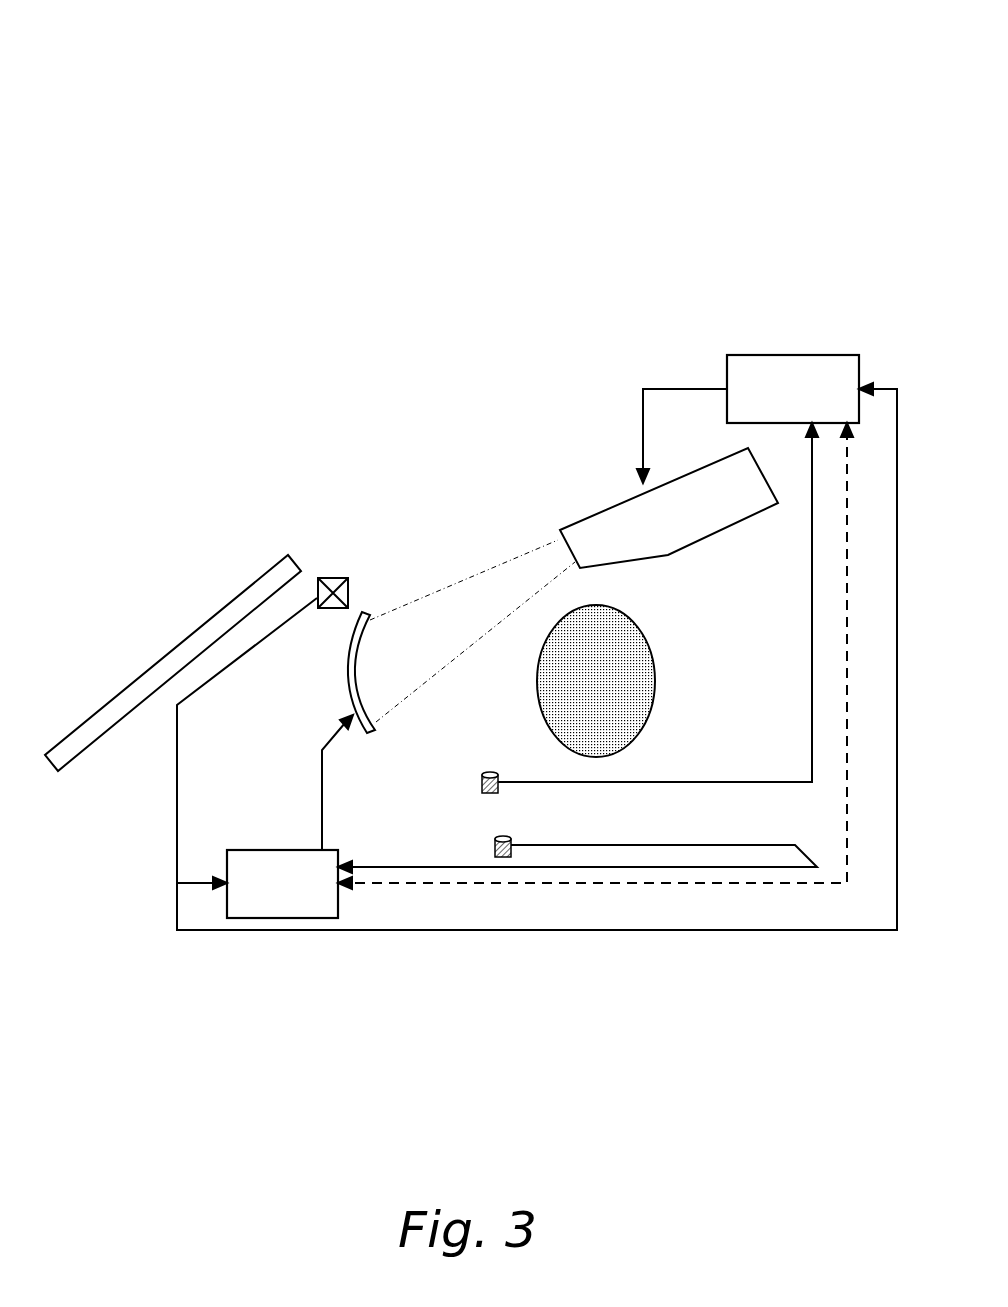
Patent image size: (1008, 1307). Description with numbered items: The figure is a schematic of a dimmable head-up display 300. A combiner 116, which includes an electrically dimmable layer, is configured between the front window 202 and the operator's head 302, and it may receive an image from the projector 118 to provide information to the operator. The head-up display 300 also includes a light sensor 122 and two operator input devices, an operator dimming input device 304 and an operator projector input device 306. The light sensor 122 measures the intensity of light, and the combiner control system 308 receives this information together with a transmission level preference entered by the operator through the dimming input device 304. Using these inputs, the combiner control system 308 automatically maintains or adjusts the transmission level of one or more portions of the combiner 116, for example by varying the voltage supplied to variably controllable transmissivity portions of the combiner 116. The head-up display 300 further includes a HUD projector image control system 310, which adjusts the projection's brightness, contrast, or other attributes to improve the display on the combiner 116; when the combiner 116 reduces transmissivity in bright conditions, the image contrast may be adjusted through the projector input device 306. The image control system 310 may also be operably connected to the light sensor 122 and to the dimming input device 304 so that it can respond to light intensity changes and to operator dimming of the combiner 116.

The dimmable head-up display 300 is at (146, 60).
The combiner 116 is at (366, 612).
The projector 118 is at (582, 522).
The light sensor 122 is at (337, 578).
The front window 202 is at (248, 583).
The operator's head 302 is at (643, 633).
The operator dimming input device 304 is at (510, 855).
The operator projector input device 306 is at (498, 792).
The combiner control system 308 is at (268, 918).
The HUD projector image control system 310 is at (727, 354).